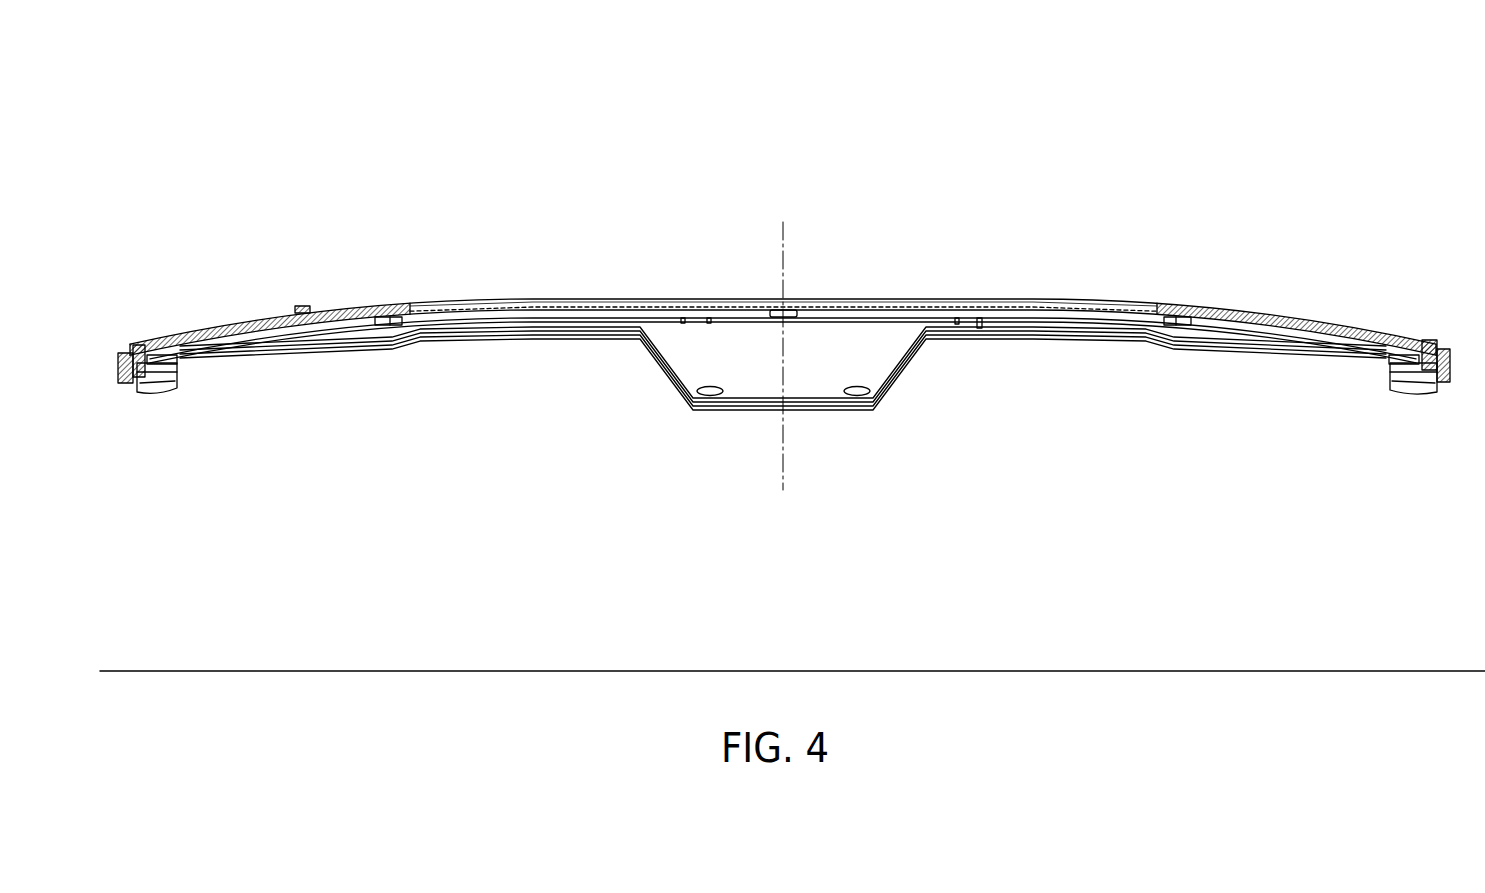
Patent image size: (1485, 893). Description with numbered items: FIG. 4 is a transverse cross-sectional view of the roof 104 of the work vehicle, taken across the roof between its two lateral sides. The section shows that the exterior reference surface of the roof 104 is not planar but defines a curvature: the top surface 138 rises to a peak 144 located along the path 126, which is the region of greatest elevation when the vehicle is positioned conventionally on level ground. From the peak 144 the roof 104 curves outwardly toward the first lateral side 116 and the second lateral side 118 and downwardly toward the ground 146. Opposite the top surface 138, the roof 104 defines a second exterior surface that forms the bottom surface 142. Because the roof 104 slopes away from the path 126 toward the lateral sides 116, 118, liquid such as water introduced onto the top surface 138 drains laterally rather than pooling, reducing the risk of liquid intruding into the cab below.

The roof 104 is at (785, 258).
The first lateral side 116 is at (118, 357).
The second lateral side 118 is at (1449, 358).
The path 126 is at (786, 302).
The top surface 138 is at (509, 303).
The bottom surface 142 is at (493, 338).
The peak 144 is at (857, 254).
The ground 146 is at (400, 670).